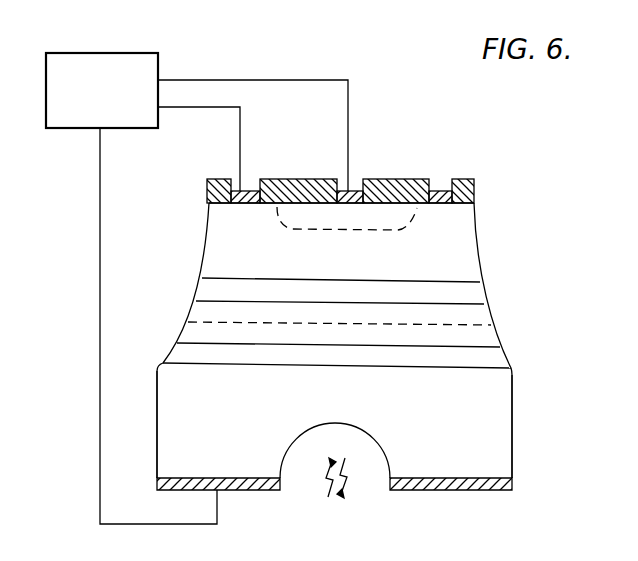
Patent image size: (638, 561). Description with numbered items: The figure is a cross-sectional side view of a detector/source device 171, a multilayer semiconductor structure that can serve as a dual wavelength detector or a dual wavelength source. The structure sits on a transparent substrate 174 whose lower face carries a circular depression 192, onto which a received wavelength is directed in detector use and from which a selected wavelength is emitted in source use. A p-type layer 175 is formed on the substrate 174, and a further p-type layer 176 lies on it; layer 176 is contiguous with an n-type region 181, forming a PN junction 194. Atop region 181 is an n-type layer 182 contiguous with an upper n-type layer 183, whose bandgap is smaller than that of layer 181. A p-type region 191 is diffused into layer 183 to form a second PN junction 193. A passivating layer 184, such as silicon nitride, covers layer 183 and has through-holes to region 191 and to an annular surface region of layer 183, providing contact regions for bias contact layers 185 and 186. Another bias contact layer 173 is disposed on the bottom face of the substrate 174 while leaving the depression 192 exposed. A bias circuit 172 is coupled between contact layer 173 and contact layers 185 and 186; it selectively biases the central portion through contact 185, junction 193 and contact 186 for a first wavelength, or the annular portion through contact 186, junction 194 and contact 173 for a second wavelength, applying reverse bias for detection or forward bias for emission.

The detector/source device 171 is at (513, 394).
The bias circuit 172 is at (108, 52).
The bias contact layer 173 is at (512, 487).
The transparent substrate 174 is at (513, 430).
The p-type layer 175 is at (502, 358).
The p-type layer 176 is at (493, 333).
The n-type region 181 is at (487, 313).
The n-type layer 182 is at (480, 292).
The upper n-type layer 183 is at (468, 231).
The passivating layer 184 is at (466, 181).
The bias contact layer 185 is at (357, 190).
The bias contact layer 186 is at (442, 190).
The p-type region 191 is at (335, 222).
The circular depression 192 is at (281, 479).
The second PN junction 193 is at (401, 234).
The PN junction 194 is at (329, 325).